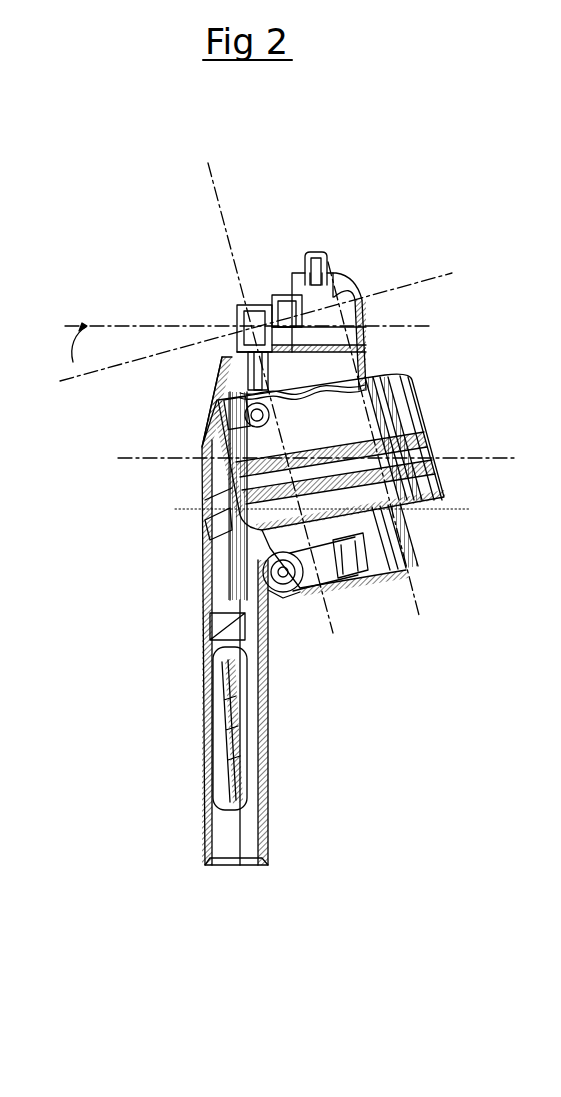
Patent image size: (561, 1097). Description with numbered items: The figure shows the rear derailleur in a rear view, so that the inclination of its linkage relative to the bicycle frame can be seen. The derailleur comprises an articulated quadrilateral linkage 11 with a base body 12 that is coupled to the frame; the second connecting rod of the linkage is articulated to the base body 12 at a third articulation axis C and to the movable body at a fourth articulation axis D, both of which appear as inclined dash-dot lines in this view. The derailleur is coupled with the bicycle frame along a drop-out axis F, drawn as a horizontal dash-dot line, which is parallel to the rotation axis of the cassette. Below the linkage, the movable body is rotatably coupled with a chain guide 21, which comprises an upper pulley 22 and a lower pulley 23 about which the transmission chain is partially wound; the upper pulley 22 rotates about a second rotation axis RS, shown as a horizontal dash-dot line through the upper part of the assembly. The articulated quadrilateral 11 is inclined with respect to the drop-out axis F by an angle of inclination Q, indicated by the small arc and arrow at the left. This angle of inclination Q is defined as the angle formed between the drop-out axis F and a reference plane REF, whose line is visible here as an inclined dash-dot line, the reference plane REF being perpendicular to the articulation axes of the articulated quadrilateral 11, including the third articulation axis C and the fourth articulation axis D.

The articulated quadrilateral linkage 11 is at (382, 368).
The base body 12 is at (318, 252).
The chain guide 21 is at (230, 632).
The upper pulley 22 is at (226, 518).
The lower pulley 23 is at (236, 758).
The third articulation axis C is at (215, 186).
The fourth articulation axis D is at (414, 598).
The drop-out axis F is at (118, 325).
The angle of inclination Q is at (67, 343).
The reference plane REF is at (415, 283).
The second rotation axis RS is at (128, 458).